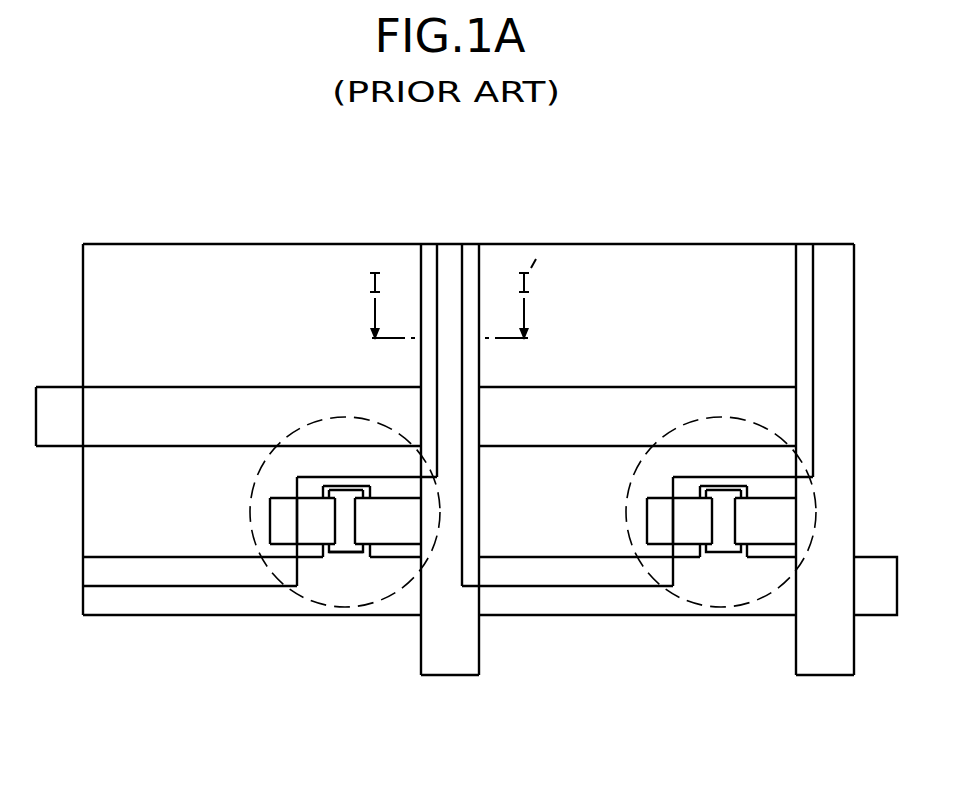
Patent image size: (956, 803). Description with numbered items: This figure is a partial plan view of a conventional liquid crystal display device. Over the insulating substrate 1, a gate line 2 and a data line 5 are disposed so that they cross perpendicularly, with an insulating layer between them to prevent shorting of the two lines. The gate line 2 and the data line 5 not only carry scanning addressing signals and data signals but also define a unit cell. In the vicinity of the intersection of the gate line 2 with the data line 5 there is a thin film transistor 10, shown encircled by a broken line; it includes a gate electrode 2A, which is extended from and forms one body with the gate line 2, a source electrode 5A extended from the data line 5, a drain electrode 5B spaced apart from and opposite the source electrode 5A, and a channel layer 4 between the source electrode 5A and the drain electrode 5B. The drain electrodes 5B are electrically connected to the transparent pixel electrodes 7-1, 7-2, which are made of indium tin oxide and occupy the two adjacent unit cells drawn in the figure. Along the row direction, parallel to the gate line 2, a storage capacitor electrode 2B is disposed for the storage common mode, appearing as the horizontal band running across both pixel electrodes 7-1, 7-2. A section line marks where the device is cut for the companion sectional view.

The insulating substrate 1 is at (642, 737).
The gate line 2 is at (155, 603).
The gate electrode 2A is at (349, 559).
The storage capacitor electrode 2B is at (585, 405).
The channel layer 4 is at (335, 548).
The data line 5 is at (450, 663).
The source electrode 5A is at (395, 528).
The drain electrode 5B is at (282, 528).
The pixel electrode 7-1 is at (214, 338).
The pixel electrode 7-2 is at (695, 338).
The thin film transistor 10 is at (326, 410).